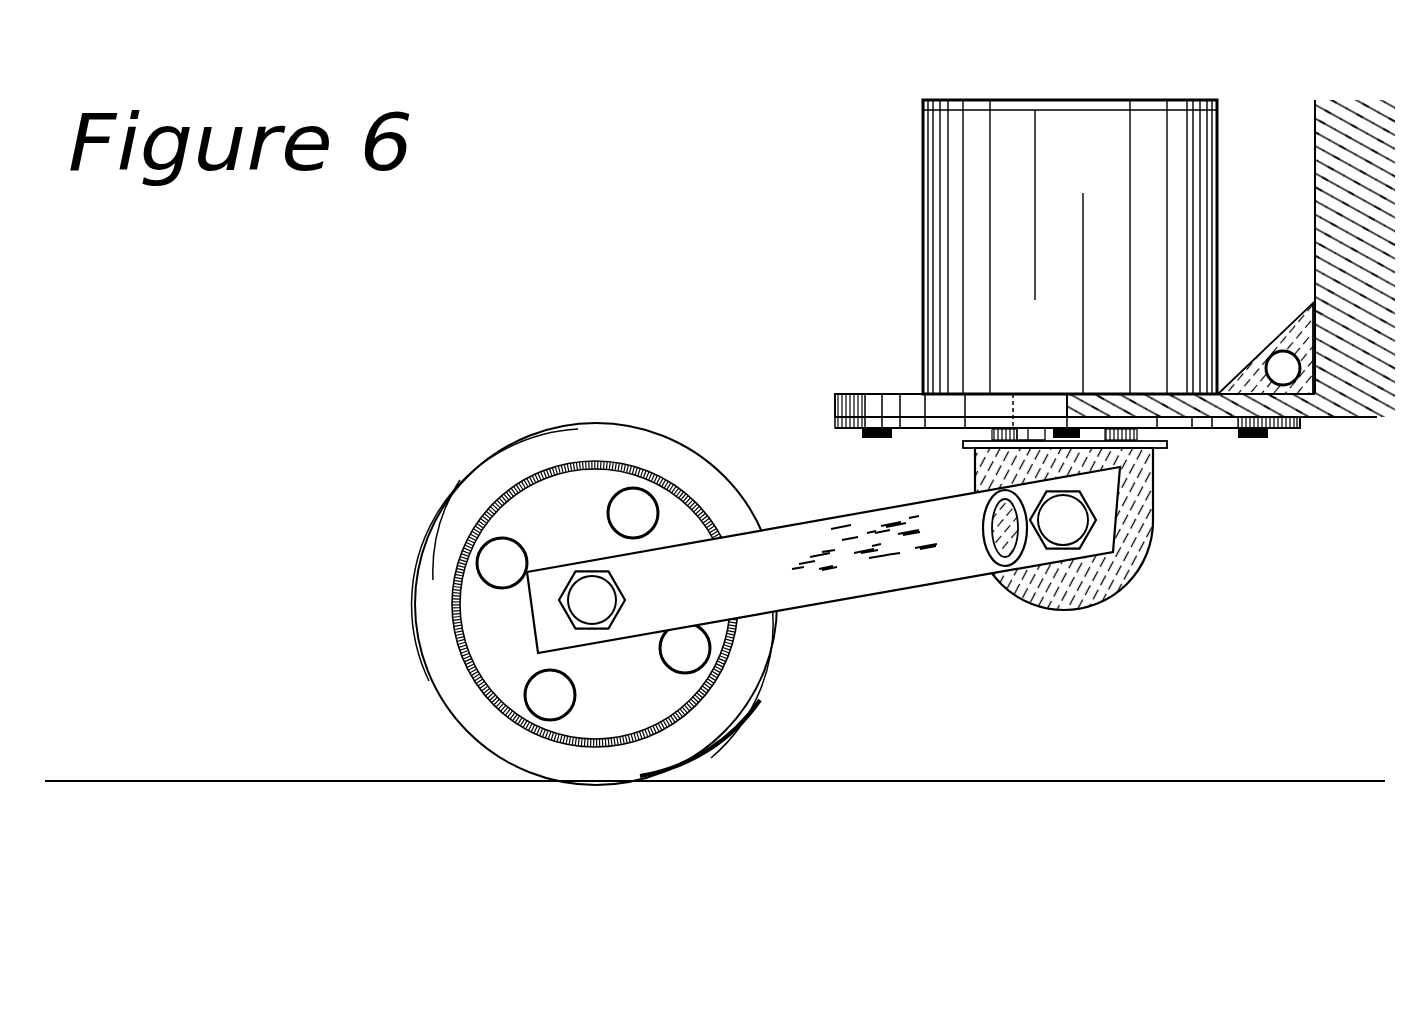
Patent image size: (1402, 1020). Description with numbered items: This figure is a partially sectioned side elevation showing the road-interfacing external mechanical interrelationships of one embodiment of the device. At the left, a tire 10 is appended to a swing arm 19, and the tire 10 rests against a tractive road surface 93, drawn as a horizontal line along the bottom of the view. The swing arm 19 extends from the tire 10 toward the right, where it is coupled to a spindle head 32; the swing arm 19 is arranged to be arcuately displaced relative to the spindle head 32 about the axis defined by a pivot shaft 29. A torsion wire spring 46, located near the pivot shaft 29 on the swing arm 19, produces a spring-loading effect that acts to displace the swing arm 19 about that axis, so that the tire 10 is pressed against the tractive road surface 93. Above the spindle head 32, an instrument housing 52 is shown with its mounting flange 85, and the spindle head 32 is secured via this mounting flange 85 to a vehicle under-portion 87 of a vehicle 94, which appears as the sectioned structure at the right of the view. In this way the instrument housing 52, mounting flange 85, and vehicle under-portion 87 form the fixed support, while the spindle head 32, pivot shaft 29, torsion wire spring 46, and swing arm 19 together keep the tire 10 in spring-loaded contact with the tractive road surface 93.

The tire 10 is at (492, 472).
The swing arm 19 is at (848, 585).
The pivot shaft 29 is at (1067, 523).
The spindle head 32 is at (1095, 588).
The torsion wire spring 46 is at (1002, 518).
The instrument housing 52 is at (945, 255).
The mounting flange 85 is at (1197, 427).
The vehicle under-portion 87 is at (877, 402).
The tractive road surface 93 is at (254, 781).
The vehicle 94 is at (1330, 230).